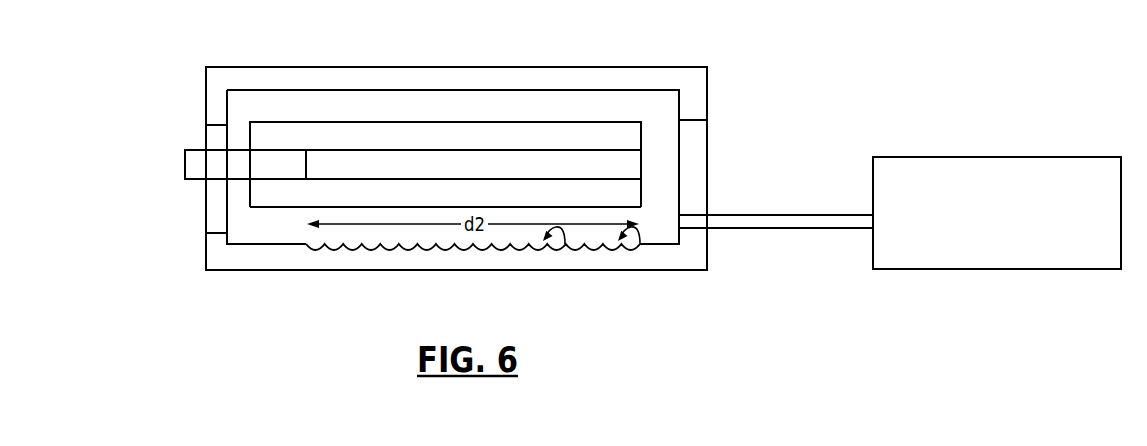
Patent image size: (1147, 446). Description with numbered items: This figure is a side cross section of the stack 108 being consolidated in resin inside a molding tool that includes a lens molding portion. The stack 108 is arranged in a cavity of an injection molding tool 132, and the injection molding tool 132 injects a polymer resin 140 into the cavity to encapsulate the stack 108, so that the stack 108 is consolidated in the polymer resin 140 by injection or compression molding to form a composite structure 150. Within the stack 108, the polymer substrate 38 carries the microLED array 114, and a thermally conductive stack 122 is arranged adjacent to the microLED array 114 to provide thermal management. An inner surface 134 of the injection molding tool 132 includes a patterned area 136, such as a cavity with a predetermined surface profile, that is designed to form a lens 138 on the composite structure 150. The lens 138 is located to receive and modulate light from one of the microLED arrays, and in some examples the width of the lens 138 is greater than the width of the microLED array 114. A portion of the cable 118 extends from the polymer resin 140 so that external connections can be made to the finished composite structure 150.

The polymer substrate 38 is at (641, 136).
The stack 108 is at (447, 119).
The microLED array 114 is at (641, 166).
The cable 118 is at (206, 148).
The thermally conductive stack 122 is at (641, 191).
The injection molding tool 132 is at (470, 64).
The inner surface 134 is at (463, 247).
The patterned area 136 is at (565, 246).
The lens 138 is at (640, 246).
The polymer resin 140 is at (453, 173).
The composite structure 150 is at (381, 102).